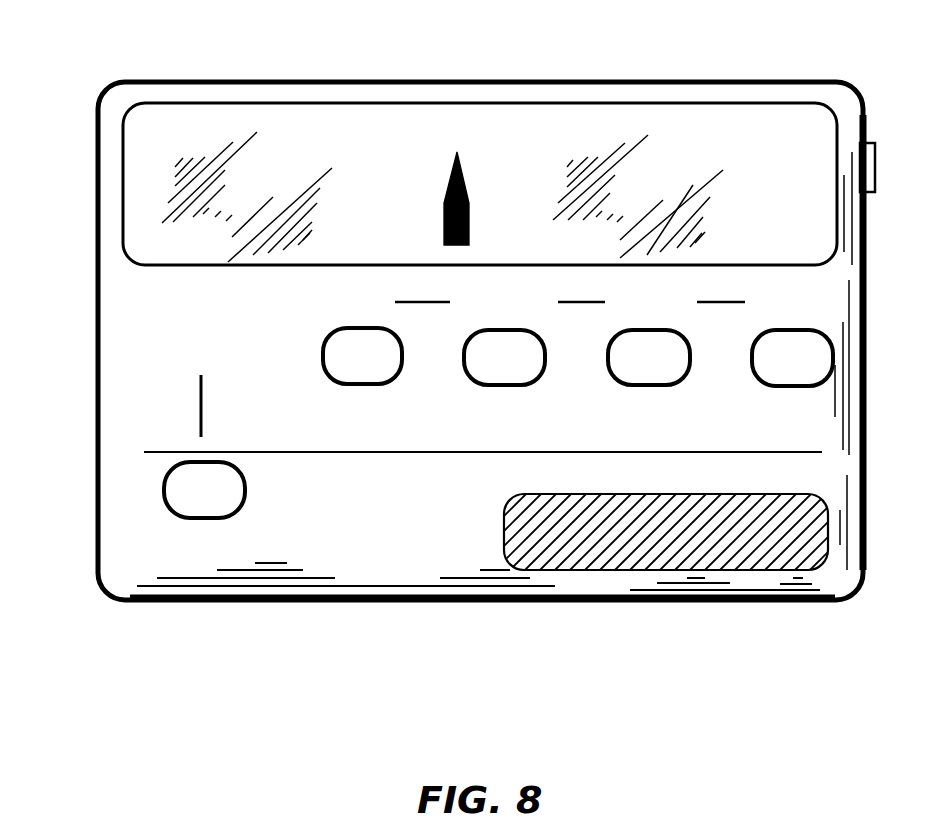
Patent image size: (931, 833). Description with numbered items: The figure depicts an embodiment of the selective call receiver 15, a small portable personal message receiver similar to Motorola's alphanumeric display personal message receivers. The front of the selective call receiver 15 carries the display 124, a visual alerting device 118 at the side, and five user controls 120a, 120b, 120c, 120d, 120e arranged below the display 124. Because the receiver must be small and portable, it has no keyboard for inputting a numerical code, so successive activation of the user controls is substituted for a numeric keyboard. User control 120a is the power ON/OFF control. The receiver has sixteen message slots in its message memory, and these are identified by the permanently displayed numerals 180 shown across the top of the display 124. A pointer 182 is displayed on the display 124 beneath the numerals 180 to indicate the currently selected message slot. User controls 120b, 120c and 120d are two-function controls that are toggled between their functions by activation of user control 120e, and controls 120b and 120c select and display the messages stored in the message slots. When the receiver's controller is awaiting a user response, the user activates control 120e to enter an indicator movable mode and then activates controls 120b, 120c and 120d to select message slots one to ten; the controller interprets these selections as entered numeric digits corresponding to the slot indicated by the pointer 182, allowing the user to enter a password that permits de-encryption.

The selective call receiver 15 is at (197, 603).
The visual alerting device 118 is at (869, 142).
The display 124 is at (208, 102).
The permanently displayed numerals 180 is at (394, 115).
The pointer 182 is at (470, 218).
The user control 120a is at (164, 490).
The user control 120b is at (323, 358).
The user control 120c is at (464, 362).
The user control 120d is at (608, 362).
The user control 120e is at (752, 362).